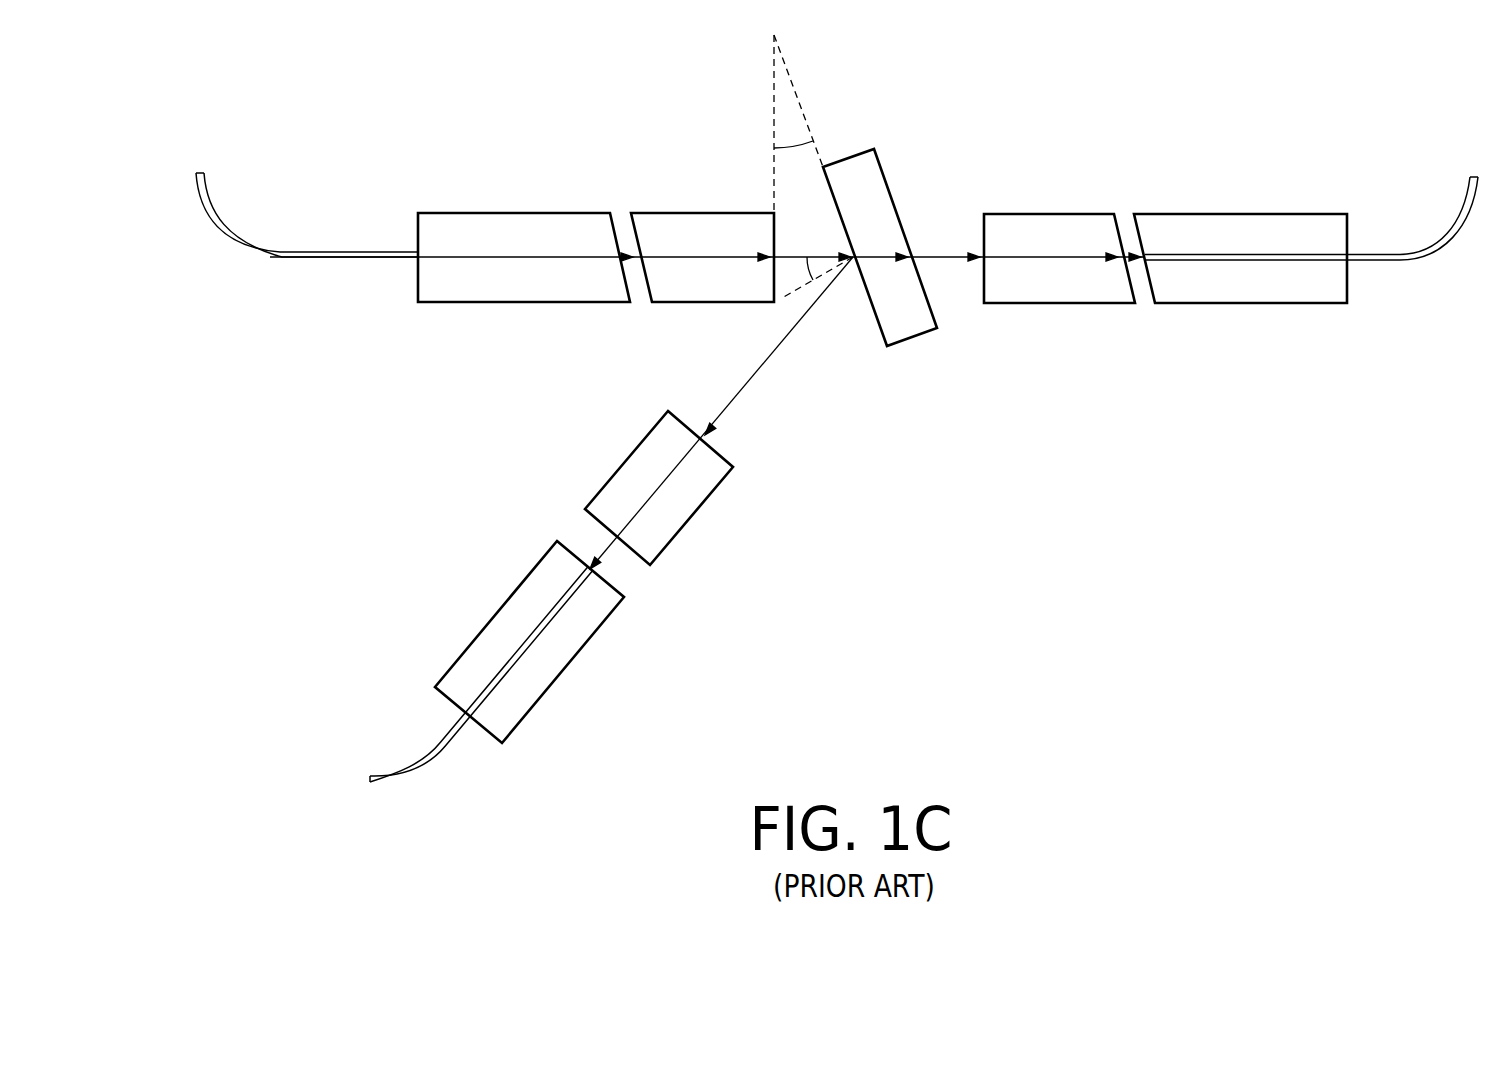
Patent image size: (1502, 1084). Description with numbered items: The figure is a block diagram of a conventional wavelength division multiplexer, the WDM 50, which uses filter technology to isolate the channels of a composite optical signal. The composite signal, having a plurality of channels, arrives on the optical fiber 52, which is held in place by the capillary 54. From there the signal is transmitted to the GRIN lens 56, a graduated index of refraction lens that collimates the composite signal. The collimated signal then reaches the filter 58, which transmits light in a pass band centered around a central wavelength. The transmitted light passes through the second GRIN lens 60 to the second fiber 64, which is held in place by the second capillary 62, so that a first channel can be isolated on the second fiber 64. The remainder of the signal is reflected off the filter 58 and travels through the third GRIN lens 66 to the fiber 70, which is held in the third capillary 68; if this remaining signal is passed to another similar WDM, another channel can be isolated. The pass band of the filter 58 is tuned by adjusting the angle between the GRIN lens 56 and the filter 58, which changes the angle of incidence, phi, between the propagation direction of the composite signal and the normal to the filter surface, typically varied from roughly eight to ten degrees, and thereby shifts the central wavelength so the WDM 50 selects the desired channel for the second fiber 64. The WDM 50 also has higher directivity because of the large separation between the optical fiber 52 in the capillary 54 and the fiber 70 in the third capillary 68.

The conventional WDM 50 is at (841, 44).
The optical fiber 52 is at (222, 240).
The capillary 54 is at (492, 213).
The GRIN lens 56 is at (668, 213).
The filter 58 is at (881, 170).
The second GRIN lens 60 is at (1043, 214).
The second capillary 62 is at (1220, 214).
The second fiber 64 is at (1453, 242).
The third GRIN lens 66 is at (621, 465).
The third capillary 68 is at (523, 582).
The fiber 70 is at (422, 770).